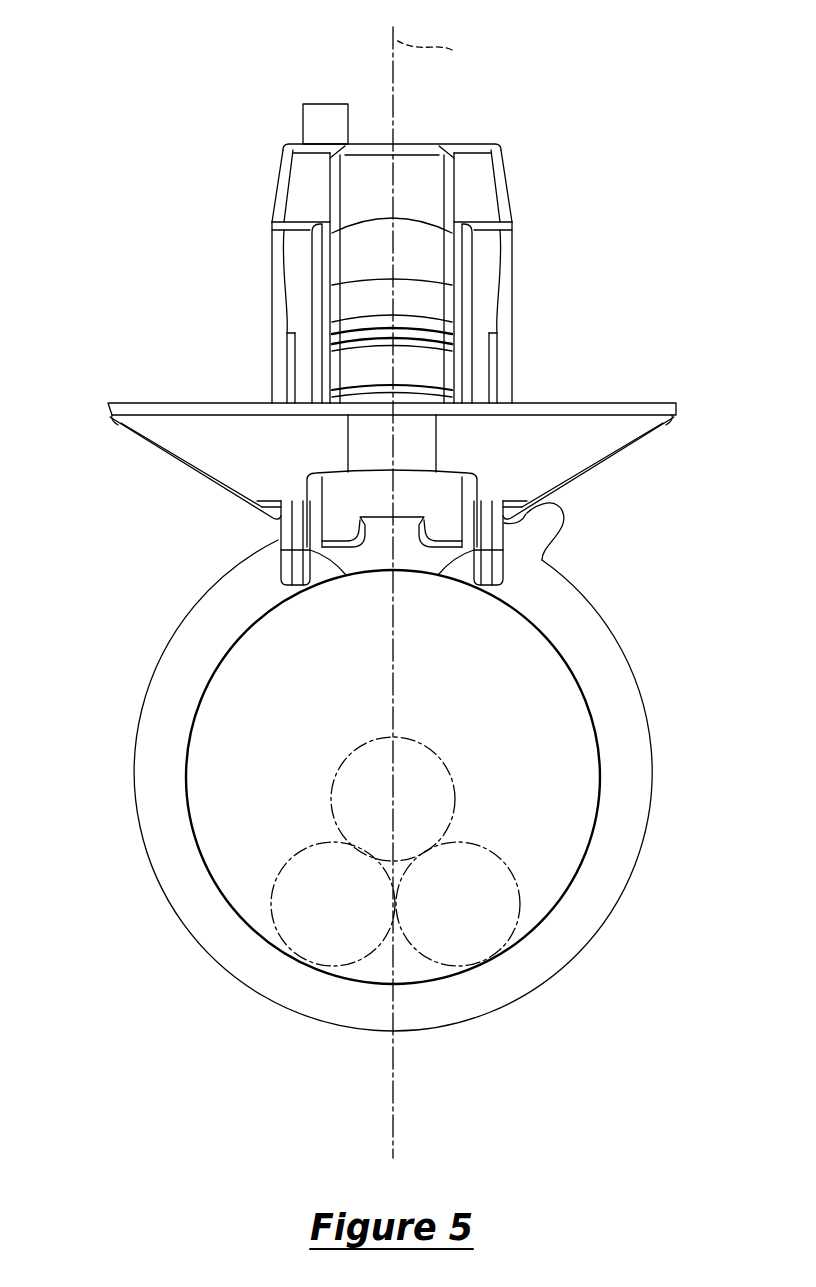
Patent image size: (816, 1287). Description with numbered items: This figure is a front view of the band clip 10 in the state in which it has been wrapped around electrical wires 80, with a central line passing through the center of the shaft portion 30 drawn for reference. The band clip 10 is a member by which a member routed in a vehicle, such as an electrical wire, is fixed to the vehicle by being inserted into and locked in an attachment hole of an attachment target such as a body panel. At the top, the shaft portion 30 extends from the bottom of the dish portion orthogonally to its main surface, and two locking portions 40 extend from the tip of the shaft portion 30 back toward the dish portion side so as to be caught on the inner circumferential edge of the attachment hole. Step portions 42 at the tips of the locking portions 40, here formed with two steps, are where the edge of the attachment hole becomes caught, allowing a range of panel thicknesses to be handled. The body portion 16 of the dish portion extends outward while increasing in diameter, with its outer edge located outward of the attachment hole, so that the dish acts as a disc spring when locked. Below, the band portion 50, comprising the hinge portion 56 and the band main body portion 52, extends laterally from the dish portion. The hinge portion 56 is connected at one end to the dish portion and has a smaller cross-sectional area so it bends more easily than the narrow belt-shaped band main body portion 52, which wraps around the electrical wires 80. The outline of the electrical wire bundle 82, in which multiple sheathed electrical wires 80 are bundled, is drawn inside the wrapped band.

The band clip 10 is at (84, 82).
The body portion 16 is at (210, 458).
The shaft portion 30 is at (482, 190).
The locking portions 40 is at (436, 265).
The step portions 42 is at (436, 352).
The band portion 50 is at (646, 505).
The band main body portion 52 is at (325, 118).
The hinge portion 56 is at (556, 522).
The electrical wires 80 is at (363, 942).
The electrical wire bundle 82 is at (490, 1074).